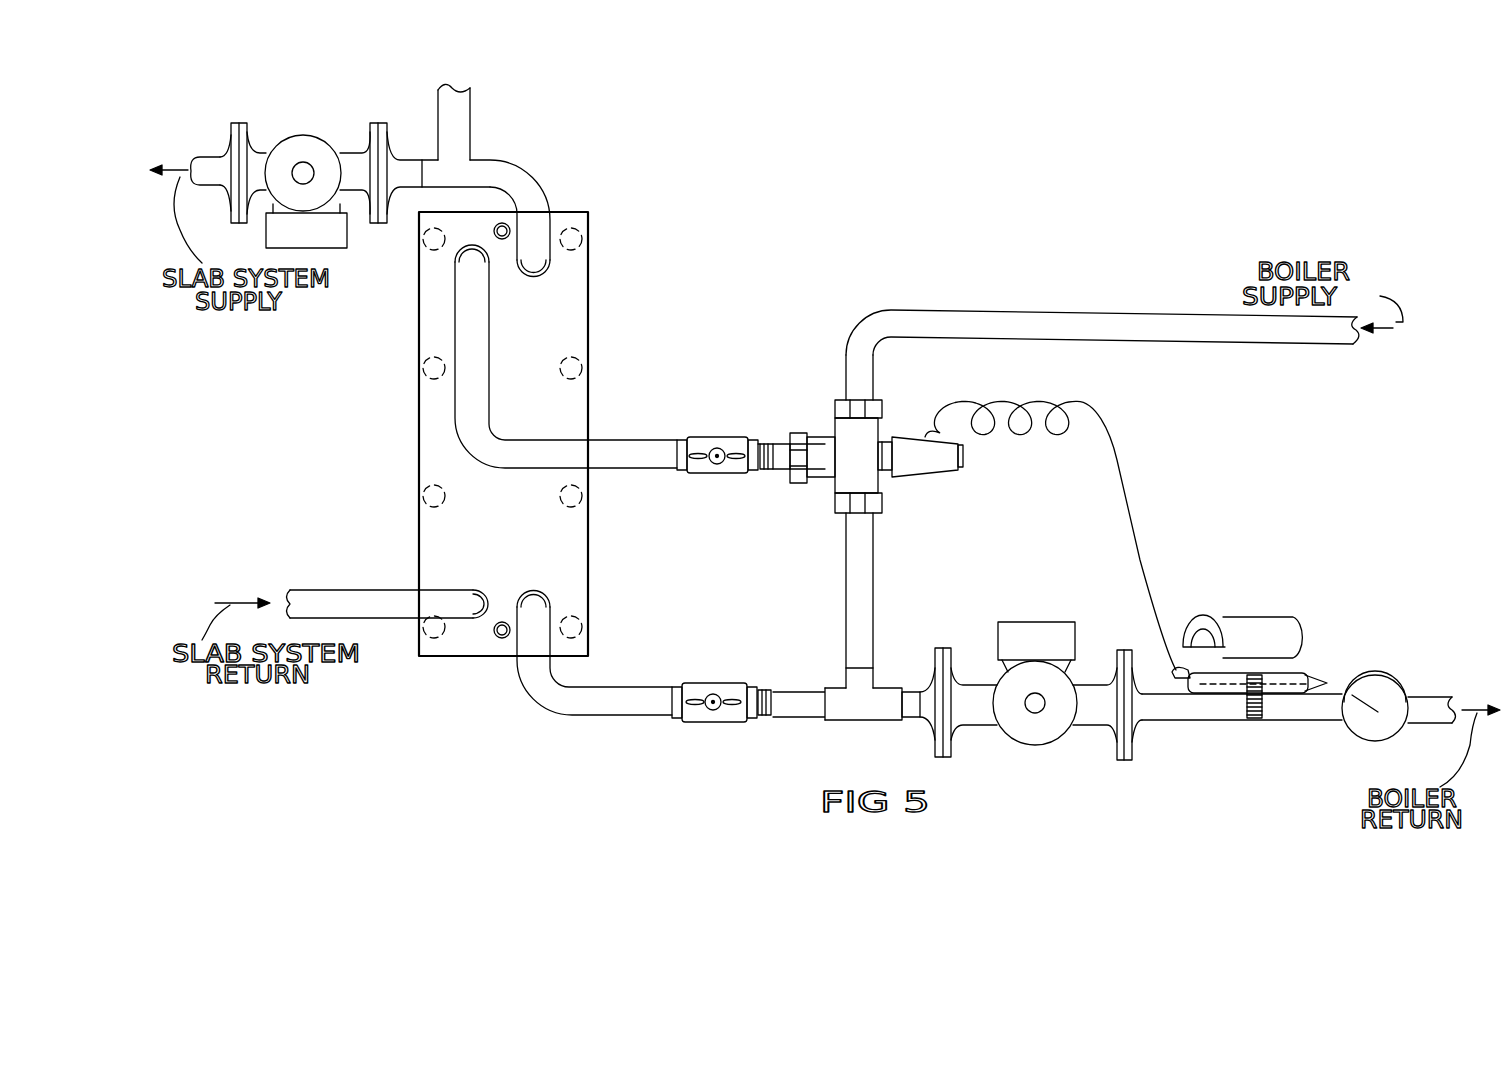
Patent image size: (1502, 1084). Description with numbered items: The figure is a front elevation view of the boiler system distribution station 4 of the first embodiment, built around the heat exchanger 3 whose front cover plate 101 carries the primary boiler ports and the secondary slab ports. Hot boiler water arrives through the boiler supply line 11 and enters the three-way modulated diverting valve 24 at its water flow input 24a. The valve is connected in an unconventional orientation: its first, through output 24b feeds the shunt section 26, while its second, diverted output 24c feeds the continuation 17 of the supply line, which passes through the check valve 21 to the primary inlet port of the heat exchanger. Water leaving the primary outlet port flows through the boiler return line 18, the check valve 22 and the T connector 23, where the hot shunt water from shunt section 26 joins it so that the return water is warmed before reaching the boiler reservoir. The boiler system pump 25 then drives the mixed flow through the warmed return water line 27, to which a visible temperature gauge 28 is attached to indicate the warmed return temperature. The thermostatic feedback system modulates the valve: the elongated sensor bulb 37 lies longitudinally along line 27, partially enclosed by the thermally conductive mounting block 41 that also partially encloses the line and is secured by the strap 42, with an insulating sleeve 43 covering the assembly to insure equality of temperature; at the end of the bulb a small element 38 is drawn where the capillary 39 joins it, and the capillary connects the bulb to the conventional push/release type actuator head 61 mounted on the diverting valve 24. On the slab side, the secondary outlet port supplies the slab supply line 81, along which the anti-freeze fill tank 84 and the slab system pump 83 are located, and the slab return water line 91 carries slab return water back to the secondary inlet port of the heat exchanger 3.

The heat exchanger 3 is at (614, 211).
The boiler system distribution station 4 is at (858, 220).
The boiler supply line 11 is at (967, 308).
The continuation of the supply line 17 is at (618, 438).
The boiler return line 18 is at (572, 715).
The check valve 21 is at (716, 437).
The check valve 22 is at (707, 683).
The T connector 23 is at (860, 720).
The three-way modulated diverting valve 24 is at (822, 470).
The water flow input 24a is at (822, 422).
The first water flow output 24b is at (888, 492).
The second water flow output 24c is at (823, 488).
The boiler system pump 25 is at (1028, 622).
The shunt section 26 is at (846, 602).
The warmed return water line 27 is at (908, 688).
The temperature gauge 28 is at (1369, 742).
The sensor bulb 37 is at (1225, 611).
The temperature sensor 38 is at (1172, 668).
The capillary 39 is at (1120, 486).
The mounting block 41 is at (1190, 694).
The strap 42 is at (1245, 707).
The insulating sleeve 43 is at (1218, 617).
The push/release type actuator head 61 is at (948, 470).
The slab supply line 81 is at (197, 157).
The slab system pump 83 is at (313, 136).
The anti-freeze fill tank 84 is at (472, 110).
The slab return water line 91 is at (327, 590).
The front cover plate 101 is at (570, 317).